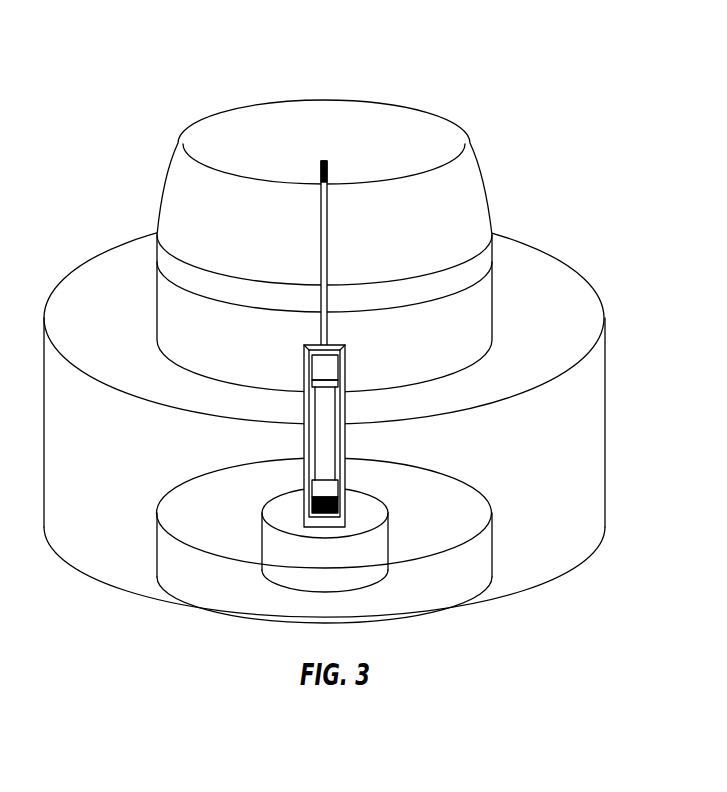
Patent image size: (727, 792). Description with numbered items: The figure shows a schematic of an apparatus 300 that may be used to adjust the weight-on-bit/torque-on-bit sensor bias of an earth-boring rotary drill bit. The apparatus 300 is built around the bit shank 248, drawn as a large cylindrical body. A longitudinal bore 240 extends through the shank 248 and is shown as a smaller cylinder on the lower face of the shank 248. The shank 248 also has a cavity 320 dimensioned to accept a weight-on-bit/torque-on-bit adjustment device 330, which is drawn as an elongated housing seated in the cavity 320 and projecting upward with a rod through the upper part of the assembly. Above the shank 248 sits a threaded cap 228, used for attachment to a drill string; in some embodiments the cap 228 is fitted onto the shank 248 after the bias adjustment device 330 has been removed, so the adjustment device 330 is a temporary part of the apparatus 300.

The apparatus 300 is at (324, 327).
The cap 228 is at (457, 140).
The bit shank 248 is at (527, 590).
The longitudinal bore 240 is at (272, 512).
The weight-on-bit/torque-on-bit adjustment device 330 is at (325, 408).
The cavity 320 is at (347, 470).